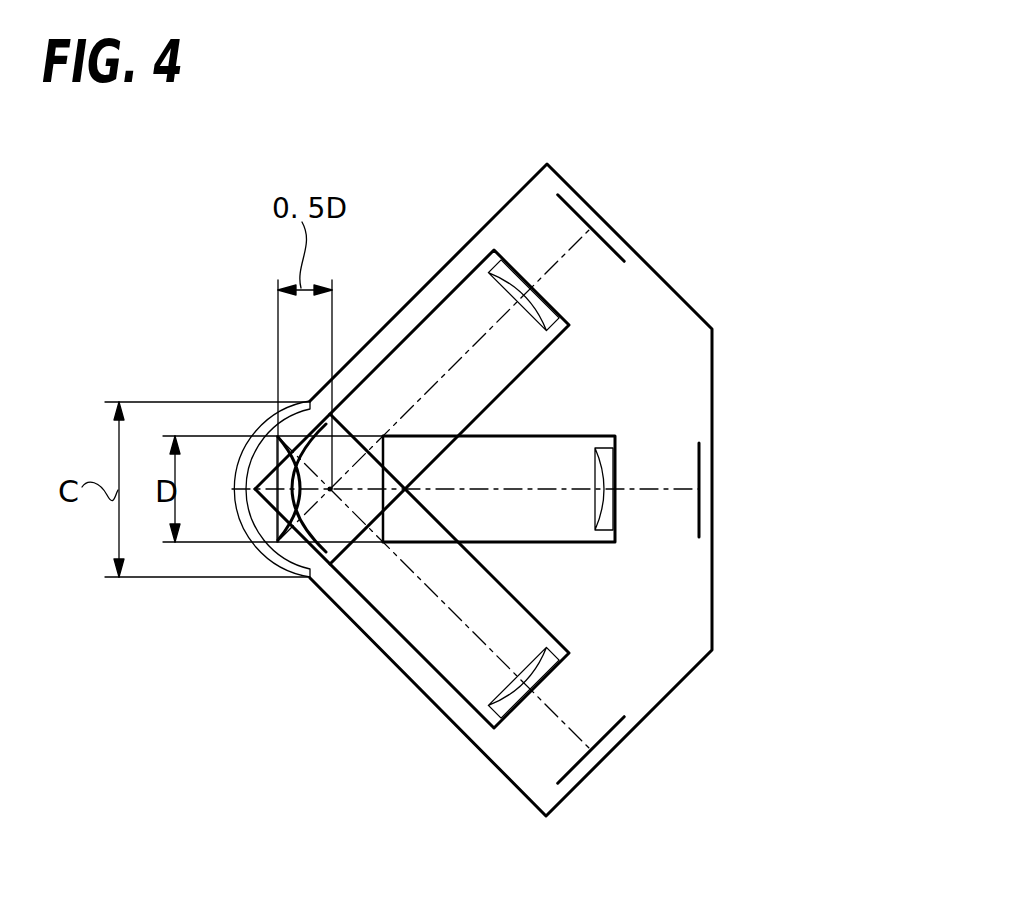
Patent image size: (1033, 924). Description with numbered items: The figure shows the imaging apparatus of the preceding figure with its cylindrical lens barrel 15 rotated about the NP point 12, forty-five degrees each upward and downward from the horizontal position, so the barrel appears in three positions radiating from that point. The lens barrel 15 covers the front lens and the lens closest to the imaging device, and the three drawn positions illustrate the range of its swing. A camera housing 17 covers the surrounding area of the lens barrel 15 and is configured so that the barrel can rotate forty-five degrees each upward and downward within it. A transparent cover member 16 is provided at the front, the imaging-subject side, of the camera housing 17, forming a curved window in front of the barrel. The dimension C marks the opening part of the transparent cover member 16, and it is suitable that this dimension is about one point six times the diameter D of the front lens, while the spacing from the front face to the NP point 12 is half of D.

The NP point 12 is at (331, 488).
The lens barrel 15 is at (477, 265).
The transparent cover member 16 is at (273, 427).
The camera housing 17 is at (660, 278).